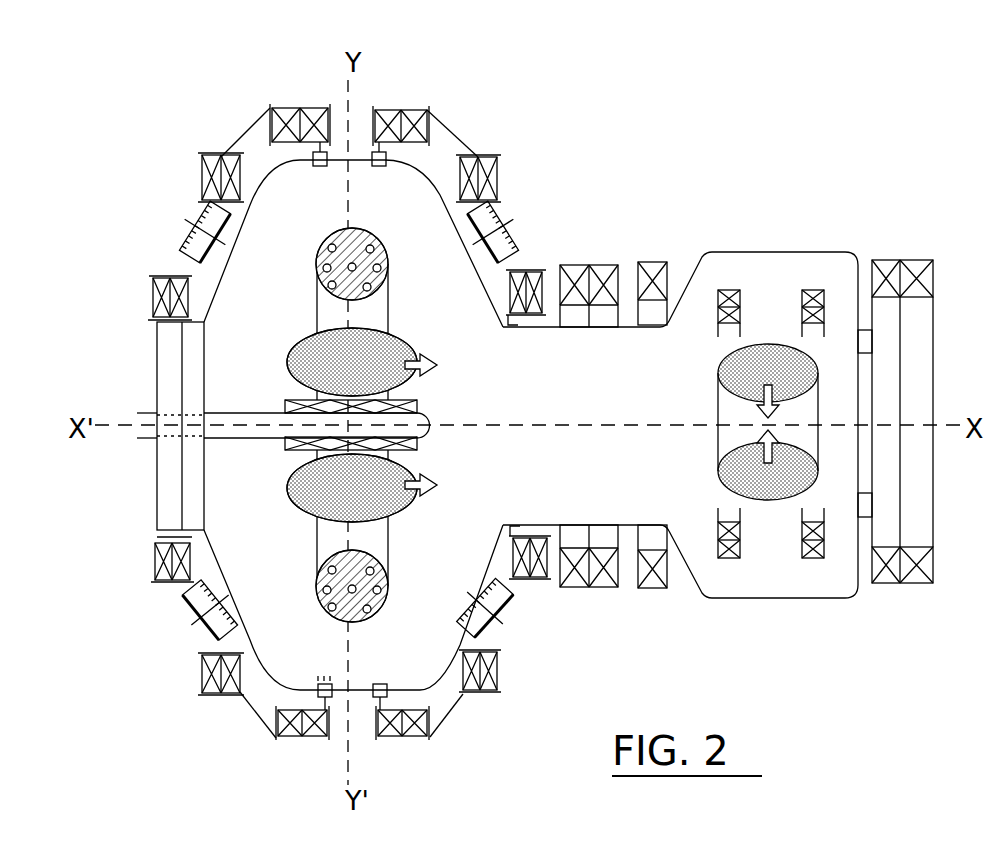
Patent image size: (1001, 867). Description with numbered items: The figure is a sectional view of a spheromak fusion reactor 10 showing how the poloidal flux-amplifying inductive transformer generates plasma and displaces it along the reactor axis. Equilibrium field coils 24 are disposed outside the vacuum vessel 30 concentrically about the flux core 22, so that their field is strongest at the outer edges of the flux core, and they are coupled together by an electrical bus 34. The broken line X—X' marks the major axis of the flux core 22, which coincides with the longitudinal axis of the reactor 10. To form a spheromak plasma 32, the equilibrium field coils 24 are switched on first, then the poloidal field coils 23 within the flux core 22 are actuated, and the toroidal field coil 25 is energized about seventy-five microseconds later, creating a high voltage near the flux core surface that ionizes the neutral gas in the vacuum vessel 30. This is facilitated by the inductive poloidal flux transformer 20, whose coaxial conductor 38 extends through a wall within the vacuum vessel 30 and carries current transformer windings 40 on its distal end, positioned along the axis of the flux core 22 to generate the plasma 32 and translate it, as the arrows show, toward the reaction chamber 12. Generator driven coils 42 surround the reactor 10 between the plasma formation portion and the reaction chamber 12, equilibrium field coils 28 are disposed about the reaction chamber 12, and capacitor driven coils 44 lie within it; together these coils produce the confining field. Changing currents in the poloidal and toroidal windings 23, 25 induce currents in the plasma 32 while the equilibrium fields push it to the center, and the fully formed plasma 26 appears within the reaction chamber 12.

The spheromak fusion reactor 10 is at (680, 235).
The reaction chamber 12 is at (763, 599).
The inductive poloidal flux transformer 20 is at (268, 452).
The flux core 22 is at (358, 229).
The poloidal field coils 23 is at (322, 273).
The equilibrium field coils 24 is at (378, 110).
The toroidal field coil 25 is at (389, 258).
The fully formed plasma 26 is at (766, 345).
The equilibrium field coils 28 is at (897, 262).
The vacuum vessel 30 is at (271, 170).
The spheromak plasma 32 is at (297, 341).
The electrical bus 34 is at (445, 127).
The coaxial conductor 38 is at (238, 412).
The current transformer windings 40 is at (420, 404).
The generator driven coils 42 is at (600, 596).
The capacitor driven coils 44 is at (822, 565).